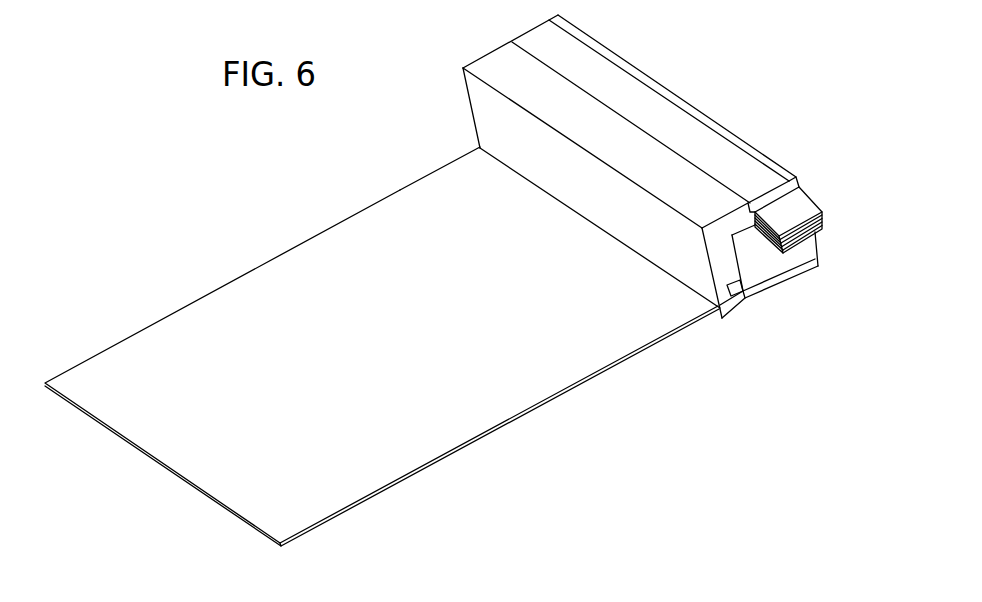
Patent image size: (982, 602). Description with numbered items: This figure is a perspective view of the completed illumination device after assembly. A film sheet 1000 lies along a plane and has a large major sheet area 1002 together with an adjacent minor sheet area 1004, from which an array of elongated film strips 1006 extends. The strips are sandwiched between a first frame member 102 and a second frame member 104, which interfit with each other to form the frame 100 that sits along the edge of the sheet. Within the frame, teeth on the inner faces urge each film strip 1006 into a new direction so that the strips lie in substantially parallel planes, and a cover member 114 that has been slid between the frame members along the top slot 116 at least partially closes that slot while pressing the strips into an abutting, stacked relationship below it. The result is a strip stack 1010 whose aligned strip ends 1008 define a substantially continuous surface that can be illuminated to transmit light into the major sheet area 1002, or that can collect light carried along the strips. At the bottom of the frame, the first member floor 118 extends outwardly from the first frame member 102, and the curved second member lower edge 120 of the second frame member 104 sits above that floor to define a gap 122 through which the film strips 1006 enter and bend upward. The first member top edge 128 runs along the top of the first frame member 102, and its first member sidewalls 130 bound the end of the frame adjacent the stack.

The frame 100 is at (553, 0).
The first frame member 102 is at (778, 278).
The second frame member 104 is at (472, 108).
The cover member 114 is at (625, 97).
The top slot 116 is at (660, 98).
The first member floor 118 is at (737, 308).
The second member lower edge 120 is at (698, 310).
The gap 122 is at (716, 313).
The first member top edge 128 is at (600, 52).
The first member sidewalls 130 is at (770, 255).
The film sheet 1000 is at (191, 310).
The major sheet area 1002 is at (265, 282).
The minor sheet area 1004 is at (490, 163).
The film strips 1006 is at (775, 208).
The strip ends 1008 is at (797, 210).
The strip stack 1010 is at (820, 218).